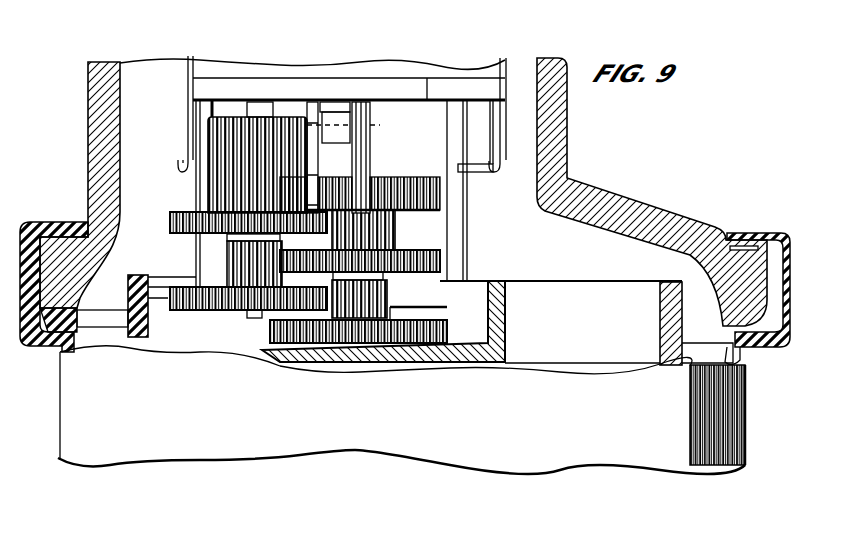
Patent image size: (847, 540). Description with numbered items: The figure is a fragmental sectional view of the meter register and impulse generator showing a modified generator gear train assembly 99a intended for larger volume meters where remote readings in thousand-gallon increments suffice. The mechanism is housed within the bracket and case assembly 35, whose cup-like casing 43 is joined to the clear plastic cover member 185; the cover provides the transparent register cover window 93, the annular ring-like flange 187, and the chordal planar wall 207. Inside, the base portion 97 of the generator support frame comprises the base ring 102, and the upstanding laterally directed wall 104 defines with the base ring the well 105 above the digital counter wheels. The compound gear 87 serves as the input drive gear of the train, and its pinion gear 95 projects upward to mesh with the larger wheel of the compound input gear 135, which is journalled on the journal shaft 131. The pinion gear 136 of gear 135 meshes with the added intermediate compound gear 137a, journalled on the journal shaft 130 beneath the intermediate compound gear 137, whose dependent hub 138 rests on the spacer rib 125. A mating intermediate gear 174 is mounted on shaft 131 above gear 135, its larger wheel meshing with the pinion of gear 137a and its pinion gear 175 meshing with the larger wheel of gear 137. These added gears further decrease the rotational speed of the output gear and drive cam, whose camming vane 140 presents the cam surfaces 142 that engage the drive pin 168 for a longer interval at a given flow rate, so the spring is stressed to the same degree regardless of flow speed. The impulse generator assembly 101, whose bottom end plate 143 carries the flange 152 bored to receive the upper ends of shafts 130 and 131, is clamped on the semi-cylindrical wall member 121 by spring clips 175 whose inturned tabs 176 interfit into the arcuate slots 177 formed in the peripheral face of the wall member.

The bracket and case assembly 35 is at (73, 419).
The cup-like casing 43 is at (535, 458).
The compound gear 87 is at (448, 340).
The register cover window 93 is at (648, 206).
The pinion gear 95 is at (448, 307).
The base portion 97 is at (128, 302).
The gear train assembly 99a is at (195, 202).
The impulse generator assembly 101 is at (475, 61).
The base ring 102 is at (138, 275).
The upstanding laterally directed wall 104 is at (506, 301).
The well 105 is at (603, 320).
The semi-cylindrical wall member 121 is at (202, 104).
The spacer rib 125 is at (168, 333).
The journal shaft 130 is at (258, 100).
The journal shaft 131 is at (375, 128).
The compound input gear 135 is at (396, 330).
The pinion gear 136 is at (345, 310).
The intermediate compound gear 137 is at (210, 139).
The intermediate compound gear 137a is at (227, 270).
The dependent hub 138 is at (252, 313).
The camming vane 140 is at (370, 150).
The cam surfaces 142 is at (342, 167).
The bottom end plate 143 is at (452, 92).
The flange 152 is at (221, 88).
The drive pin 168 is at (340, 100).
The intermediate gear 174 is at (398, 258).
The spring clips 175 is at (190, 60).
The tabs 176 is at (184, 168).
The arcuate slots 177 is at (475, 166).
The cover member 185 is at (552, 128).
The annular ring-like flange 187 is at (745, 240).
The chordal planar wall 207 is at (568, 66).